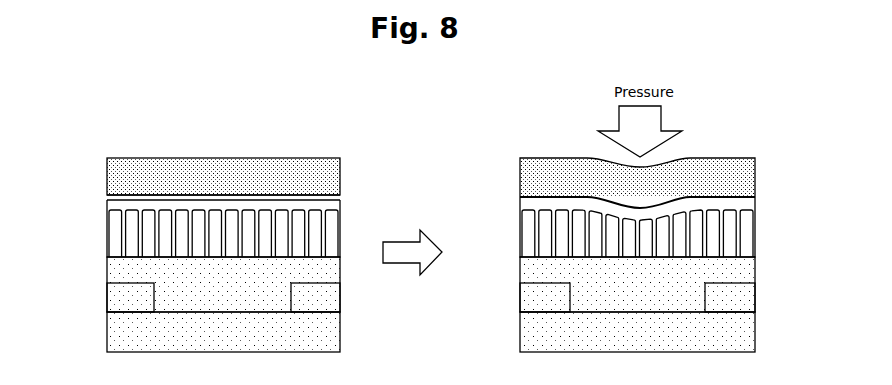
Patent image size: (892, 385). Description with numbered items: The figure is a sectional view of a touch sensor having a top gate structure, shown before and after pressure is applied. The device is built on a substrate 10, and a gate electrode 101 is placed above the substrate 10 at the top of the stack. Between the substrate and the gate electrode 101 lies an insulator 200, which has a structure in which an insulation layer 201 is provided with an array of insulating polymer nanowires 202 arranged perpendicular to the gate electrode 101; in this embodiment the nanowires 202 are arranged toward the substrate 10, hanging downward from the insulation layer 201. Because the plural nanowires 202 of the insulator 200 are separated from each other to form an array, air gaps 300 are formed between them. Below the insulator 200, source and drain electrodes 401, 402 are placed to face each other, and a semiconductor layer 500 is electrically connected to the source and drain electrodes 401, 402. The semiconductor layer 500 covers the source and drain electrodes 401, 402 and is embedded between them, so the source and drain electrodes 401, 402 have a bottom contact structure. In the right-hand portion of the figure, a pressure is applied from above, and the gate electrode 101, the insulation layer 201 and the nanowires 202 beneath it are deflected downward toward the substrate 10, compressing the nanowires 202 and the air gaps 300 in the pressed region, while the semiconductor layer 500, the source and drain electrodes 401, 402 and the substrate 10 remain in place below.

The gate electrode 101 is at (340, 172).
The insulator 200 is at (384, 224).
The insulation layer 201 is at (107, 200).
The insulating polymer nanowires 202 is at (107, 240).
The air gaps 300 is at (340, 228).
The source electrode 401 is at (107, 298).
The drain electrode 402 is at (340, 303).
The semiconductor layer 500 is at (340, 275).
The substrate 10 is at (340, 337).